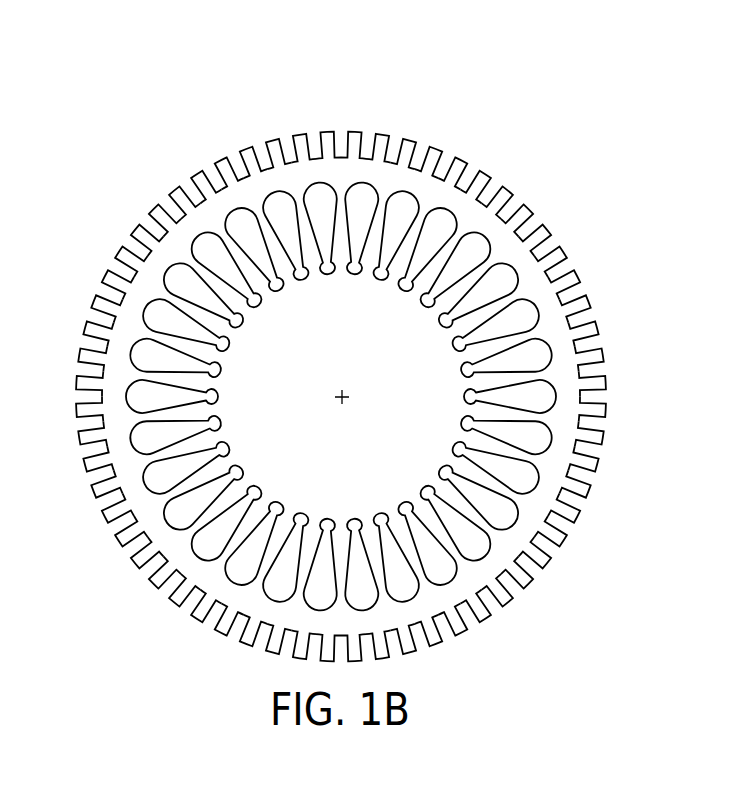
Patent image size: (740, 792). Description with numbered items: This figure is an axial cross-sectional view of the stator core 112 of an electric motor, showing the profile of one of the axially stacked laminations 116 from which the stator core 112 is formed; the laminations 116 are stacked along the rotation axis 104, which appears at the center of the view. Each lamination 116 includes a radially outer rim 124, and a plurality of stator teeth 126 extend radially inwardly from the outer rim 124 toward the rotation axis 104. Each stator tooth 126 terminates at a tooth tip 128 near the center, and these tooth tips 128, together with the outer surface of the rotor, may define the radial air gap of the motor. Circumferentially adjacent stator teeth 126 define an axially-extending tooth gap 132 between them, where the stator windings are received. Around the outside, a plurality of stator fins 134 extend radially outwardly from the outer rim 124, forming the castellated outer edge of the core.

The rotation axis 104 is at (343, 393).
The stator core 112 is at (136, 128).
The lamination 116 is at (245, 182).
The radially outer rim 124 is at (480, 210).
The stator tooth 126 is at (257, 237).
The tooth tip 128 is at (243, 480).
The tooth gap 132 is at (137, 297).
The stator fin 134 is at (583, 300).